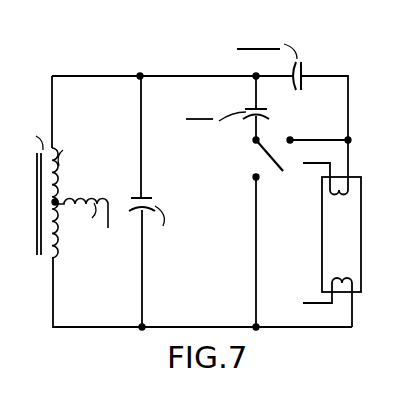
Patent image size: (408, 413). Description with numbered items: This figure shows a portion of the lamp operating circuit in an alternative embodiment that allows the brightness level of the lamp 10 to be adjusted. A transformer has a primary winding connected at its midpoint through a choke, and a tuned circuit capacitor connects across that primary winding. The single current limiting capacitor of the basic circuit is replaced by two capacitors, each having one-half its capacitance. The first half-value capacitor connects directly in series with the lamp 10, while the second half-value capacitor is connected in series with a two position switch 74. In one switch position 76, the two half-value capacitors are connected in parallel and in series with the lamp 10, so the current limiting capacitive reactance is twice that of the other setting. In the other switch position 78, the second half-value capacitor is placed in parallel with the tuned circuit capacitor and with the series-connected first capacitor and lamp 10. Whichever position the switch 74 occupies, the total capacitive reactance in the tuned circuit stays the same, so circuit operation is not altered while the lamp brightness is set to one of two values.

The lamp 10 is at (314, 251).
The two position switch 74 is at (253, 148).
The switch position 76 is at (291, 138).
The switch position 78 is at (262, 179).